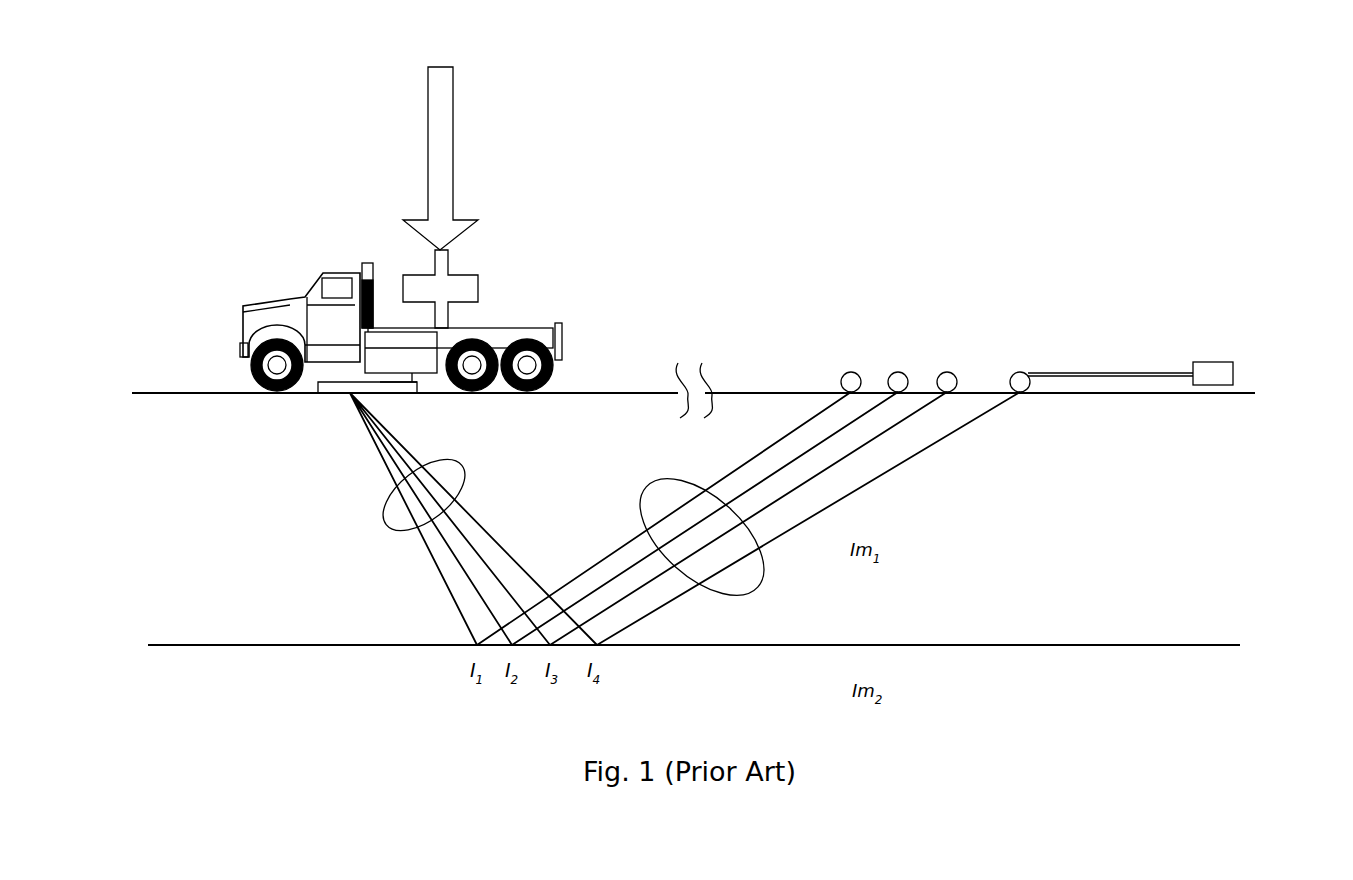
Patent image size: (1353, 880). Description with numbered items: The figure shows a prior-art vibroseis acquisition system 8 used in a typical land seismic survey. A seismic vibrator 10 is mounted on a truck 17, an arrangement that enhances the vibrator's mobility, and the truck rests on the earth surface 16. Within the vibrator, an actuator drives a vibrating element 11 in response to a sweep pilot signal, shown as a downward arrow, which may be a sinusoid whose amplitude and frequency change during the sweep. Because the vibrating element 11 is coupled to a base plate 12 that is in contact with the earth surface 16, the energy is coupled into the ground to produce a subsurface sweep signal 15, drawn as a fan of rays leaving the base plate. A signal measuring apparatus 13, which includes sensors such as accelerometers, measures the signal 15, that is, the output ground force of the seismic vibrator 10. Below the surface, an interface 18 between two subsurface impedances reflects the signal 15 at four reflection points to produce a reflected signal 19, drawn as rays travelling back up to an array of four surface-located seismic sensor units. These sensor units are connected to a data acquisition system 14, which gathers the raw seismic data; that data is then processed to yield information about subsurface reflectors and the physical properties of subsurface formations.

The vibroseis acquisition system 8 is at (980, 293).
The seismic vibrator 10 is at (357, 241).
The vibrating element 11 is at (463, 275).
The base plate 12 is at (338, 383).
The signal measuring apparatus 13 is at (387, 383).
The data acquisition system 14 is at (1215, 362).
The subsurface sweep signal 15 is at (380, 530).
The earth surface 16 is at (195, 392).
The truck 17 is at (345, 272).
The interface 18 is at (1097, 644).
The reflected signal 19 is at (763, 582).